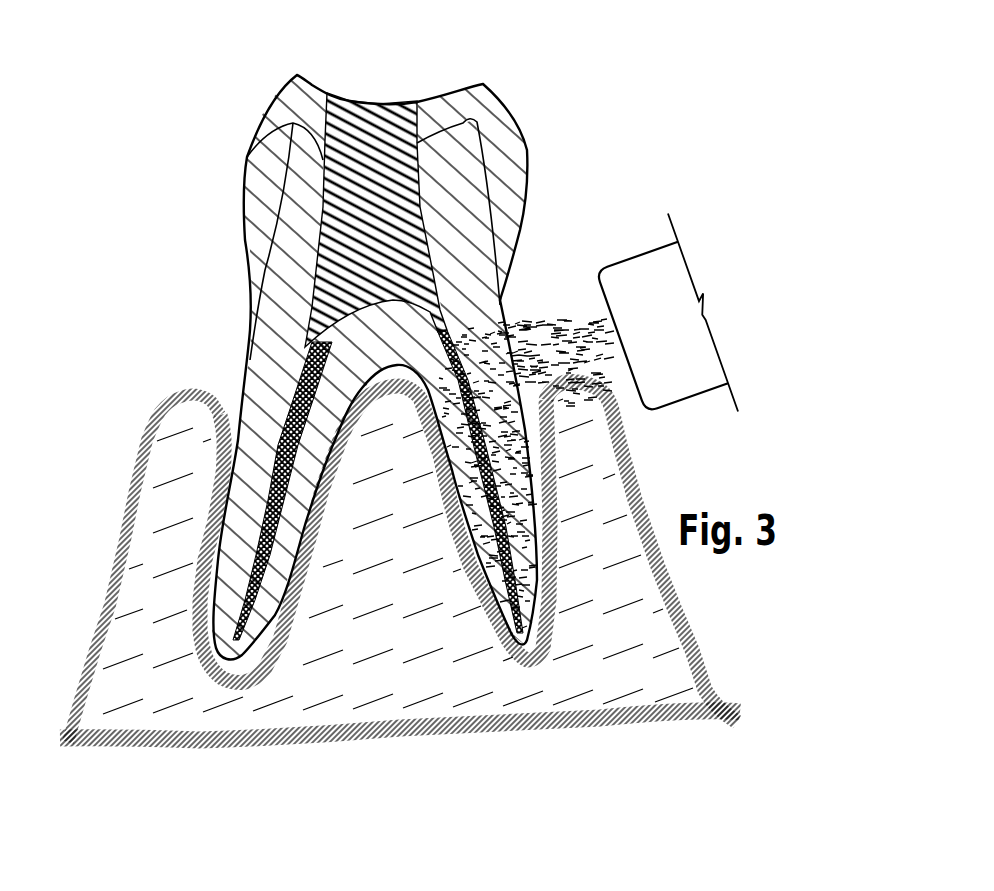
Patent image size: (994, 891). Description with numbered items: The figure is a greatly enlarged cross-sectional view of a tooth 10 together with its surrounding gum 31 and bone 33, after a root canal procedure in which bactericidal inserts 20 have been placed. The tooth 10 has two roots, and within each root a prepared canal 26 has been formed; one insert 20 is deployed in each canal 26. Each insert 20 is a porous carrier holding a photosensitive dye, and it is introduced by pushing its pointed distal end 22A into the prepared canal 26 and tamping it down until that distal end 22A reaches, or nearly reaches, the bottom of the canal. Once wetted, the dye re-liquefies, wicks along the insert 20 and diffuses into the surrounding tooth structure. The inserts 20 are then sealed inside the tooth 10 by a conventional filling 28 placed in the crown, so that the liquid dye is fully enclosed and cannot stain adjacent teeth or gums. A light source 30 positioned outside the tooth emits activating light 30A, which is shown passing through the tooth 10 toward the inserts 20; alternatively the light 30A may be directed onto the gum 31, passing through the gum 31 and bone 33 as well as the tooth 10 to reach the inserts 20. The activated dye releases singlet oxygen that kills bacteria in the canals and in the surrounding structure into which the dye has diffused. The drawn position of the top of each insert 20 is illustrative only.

The tooth 10 is at (247, 157).
The bactericidal insert 20 is at (250, 378).
The pointed distal end 22A is at (213, 623).
The prepared canal 26 is at (300, 355).
The filling 28 is at (357, 167).
The light source 30 is at (627, 293).
The activating light 30A is at (577, 420).
The gum 31 is at (685, 643).
The bone 33 is at (668, 695).